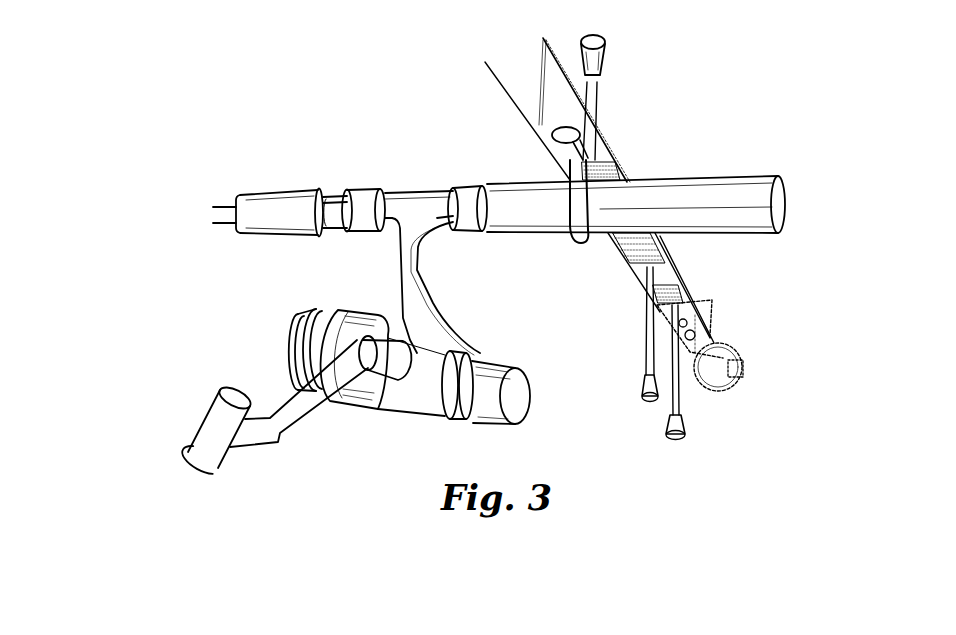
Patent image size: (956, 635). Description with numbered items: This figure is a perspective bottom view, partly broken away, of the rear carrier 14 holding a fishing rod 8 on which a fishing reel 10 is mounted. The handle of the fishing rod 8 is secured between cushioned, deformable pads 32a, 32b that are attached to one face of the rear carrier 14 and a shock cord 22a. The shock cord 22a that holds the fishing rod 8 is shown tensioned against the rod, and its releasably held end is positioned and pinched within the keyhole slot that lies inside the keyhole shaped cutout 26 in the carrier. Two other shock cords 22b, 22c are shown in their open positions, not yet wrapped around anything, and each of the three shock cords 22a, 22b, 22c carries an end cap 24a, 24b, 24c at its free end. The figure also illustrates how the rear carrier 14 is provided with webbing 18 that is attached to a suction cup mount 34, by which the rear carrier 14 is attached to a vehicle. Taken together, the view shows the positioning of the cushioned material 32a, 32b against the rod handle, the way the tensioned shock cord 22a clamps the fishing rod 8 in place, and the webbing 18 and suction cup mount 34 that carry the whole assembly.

The fishing rod 8 is at (746, 194).
The fishing reel 10 is at (333, 343).
The rear carrier 14 is at (533, 90).
The webbing 18 is at (700, 340).
The shock cord 22a is at (570, 177).
The shock cord 22b is at (675, 342).
The shock cord 22c is at (648, 363).
The shock cord end cap 24a is at (596, 58).
The shock cord end cap 24b is at (643, 385).
The shock cord end cap 24c is at (668, 430).
The keyhole shaped cutout 26 is at (553, 133).
The cushioned and deformable material 32a is at (650, 245).
The cushioned and deformable material 32b is at (673, 293).
The suction cup mount 34 is at (718, 388).